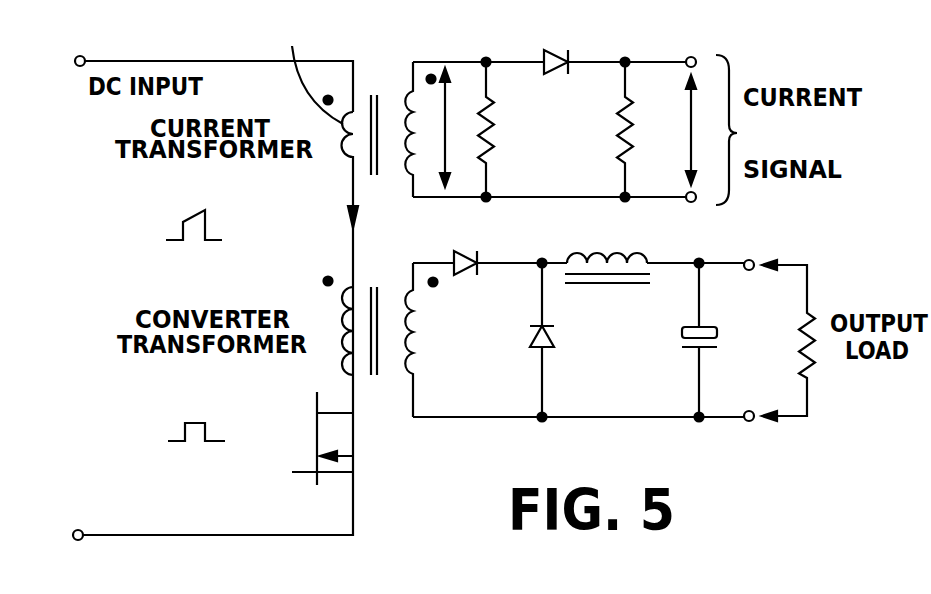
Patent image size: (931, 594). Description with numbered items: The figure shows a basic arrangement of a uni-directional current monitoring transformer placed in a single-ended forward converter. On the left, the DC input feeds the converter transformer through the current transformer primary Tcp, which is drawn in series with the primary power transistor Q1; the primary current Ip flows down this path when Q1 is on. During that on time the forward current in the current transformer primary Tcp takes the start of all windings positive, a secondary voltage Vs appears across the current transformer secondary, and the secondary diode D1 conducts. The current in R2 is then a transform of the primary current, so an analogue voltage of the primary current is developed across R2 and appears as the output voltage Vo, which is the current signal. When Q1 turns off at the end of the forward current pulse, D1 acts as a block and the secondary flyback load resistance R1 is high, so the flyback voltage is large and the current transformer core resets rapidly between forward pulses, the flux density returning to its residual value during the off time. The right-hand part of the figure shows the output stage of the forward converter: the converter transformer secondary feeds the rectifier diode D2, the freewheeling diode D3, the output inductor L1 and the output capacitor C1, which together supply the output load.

The current transformer primary Tcp is at (323, 243).
The primary current Ip is at (340, 220).
The secondary voltage Vs is at (447, 127).
The secondary flyback load resistance R1 is at (505, 130).
The resistor R2 is at (605, 130).
The secondary diode D1 is at (555, 46).
The output voltage (current signal) Vo is at (688, 130).
The primary power transistor Q1 is at (329, 438).
The rectifier diode D2 is at (468, 282).
The freewheeling diode D3 is at (558, 340).
The output inductor L1 is at (607, 253).
The output capacitor C1 is at (711, 340).